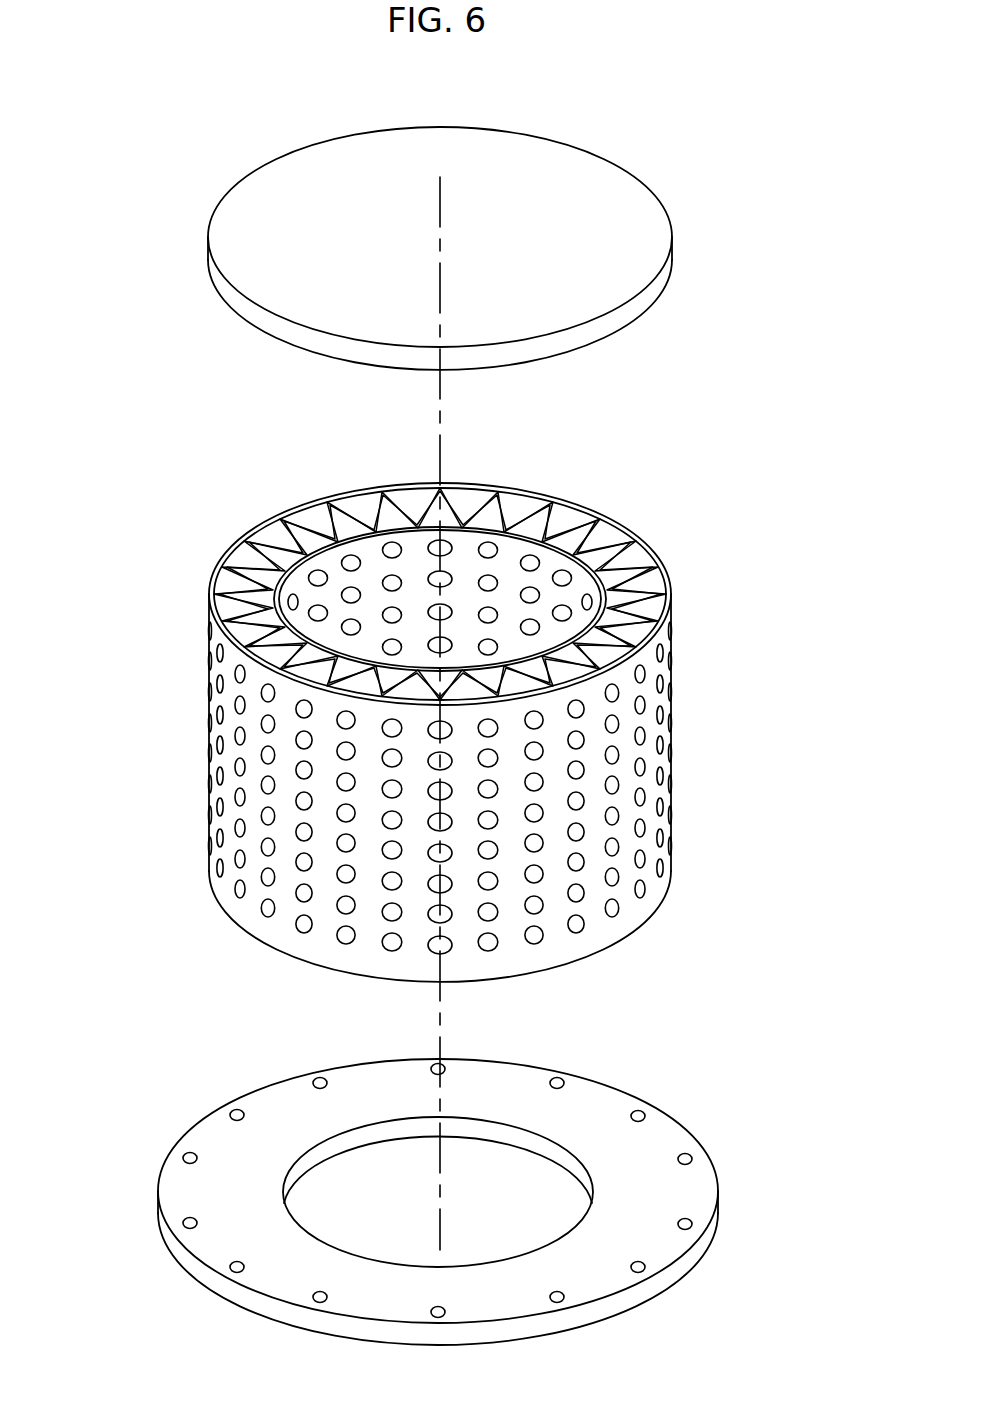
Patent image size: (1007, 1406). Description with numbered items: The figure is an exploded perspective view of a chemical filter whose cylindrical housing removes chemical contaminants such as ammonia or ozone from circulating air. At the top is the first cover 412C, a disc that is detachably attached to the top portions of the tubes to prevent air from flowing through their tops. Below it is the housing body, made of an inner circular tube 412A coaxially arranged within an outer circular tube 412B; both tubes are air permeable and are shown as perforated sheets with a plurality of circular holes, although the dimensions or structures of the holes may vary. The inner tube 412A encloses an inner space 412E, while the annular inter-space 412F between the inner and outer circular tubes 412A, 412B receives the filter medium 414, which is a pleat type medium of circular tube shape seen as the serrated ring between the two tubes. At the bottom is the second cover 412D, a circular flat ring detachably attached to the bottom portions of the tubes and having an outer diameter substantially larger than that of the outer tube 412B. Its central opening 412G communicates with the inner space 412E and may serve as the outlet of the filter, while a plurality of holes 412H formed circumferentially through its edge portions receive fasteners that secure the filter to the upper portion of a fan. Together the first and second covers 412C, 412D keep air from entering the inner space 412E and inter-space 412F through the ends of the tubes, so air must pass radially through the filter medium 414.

The inner circular tube 412A is at (598, 543).
The outer circular tube 412B is at (662, 565).
The first cover 412C is at (608, 192).
The second cover 412D is at (702, 1188).
The inner space 412E is at (336, 558).
The inter-space 412F is at (256, 561).
The opening 412G is at (362, 1174).
The holes 412H is at (191, 1156).
The filter medium 414 is at (233, 593).